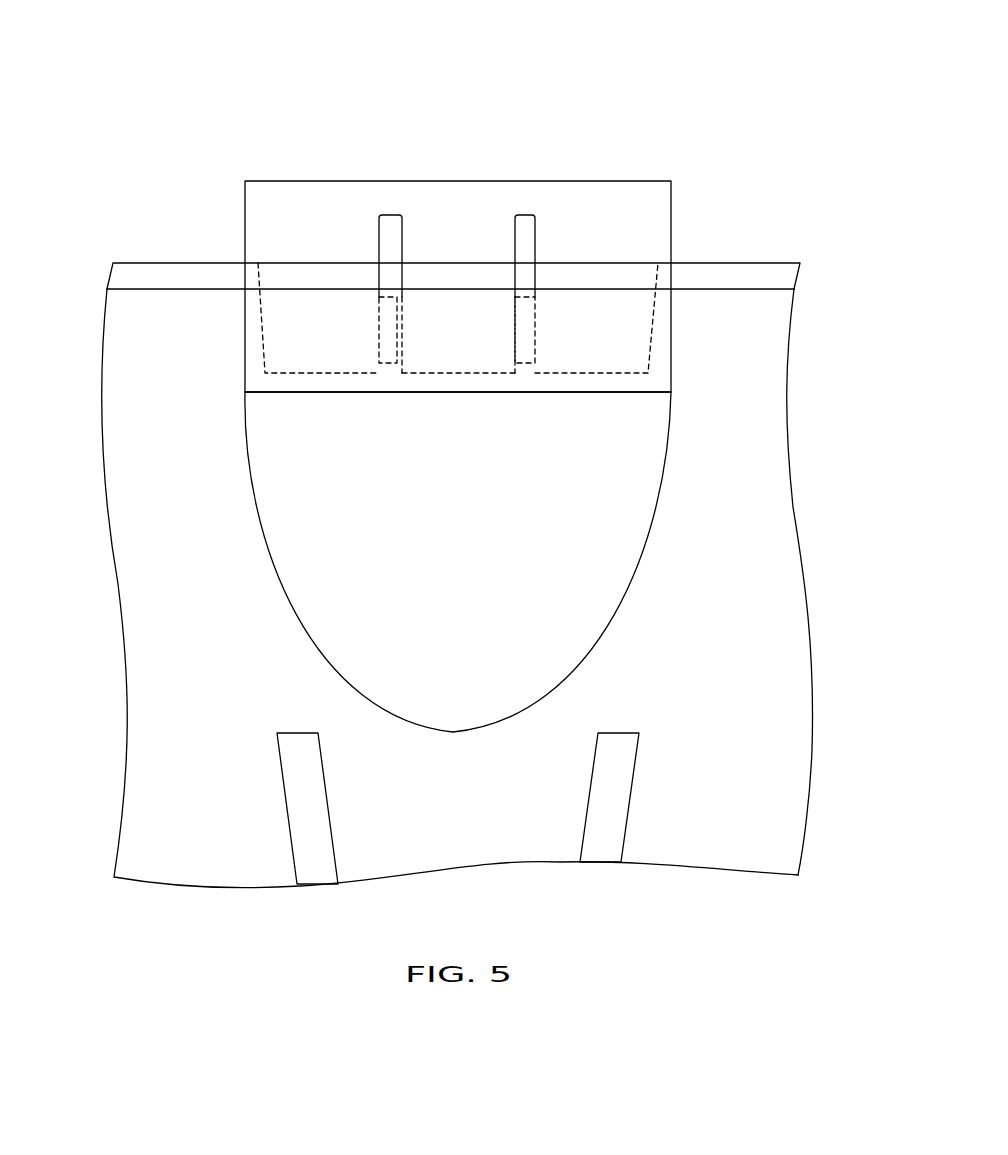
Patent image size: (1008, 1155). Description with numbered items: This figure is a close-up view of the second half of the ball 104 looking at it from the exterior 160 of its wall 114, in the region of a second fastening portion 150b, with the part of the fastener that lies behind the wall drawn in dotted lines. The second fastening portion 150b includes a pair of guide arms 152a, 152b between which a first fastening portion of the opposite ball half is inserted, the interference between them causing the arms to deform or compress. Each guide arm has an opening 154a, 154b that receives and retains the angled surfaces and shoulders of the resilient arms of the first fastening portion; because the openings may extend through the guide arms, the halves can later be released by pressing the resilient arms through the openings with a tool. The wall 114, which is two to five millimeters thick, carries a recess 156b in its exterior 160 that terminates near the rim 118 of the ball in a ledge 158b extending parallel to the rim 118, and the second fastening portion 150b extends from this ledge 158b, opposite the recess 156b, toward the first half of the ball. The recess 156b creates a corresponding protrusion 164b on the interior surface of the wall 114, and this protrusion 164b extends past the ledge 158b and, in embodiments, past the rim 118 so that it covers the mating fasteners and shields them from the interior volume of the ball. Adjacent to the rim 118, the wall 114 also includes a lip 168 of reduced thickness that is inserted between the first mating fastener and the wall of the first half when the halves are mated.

The second half of the ball 104 is at (588, 57).
The second wall 114 is at (148, 545).
The rim 118 is at (190, 262).
The lip 168 is at (147, 287).
The exterior of the wall 160 is at (787, 703).
The second fastening portion 150b is at (448, 115).
The protrusion 164b is at (642, 190).
The ledge 158b is at (555, 393).
The guide arm 152a is at (392, 233).
The guide arm 152b is at (527, 228).
The opening 154a is at (378, 342).
The opening 154b is at (533, 342).
The recess 156b is at (487, 634).